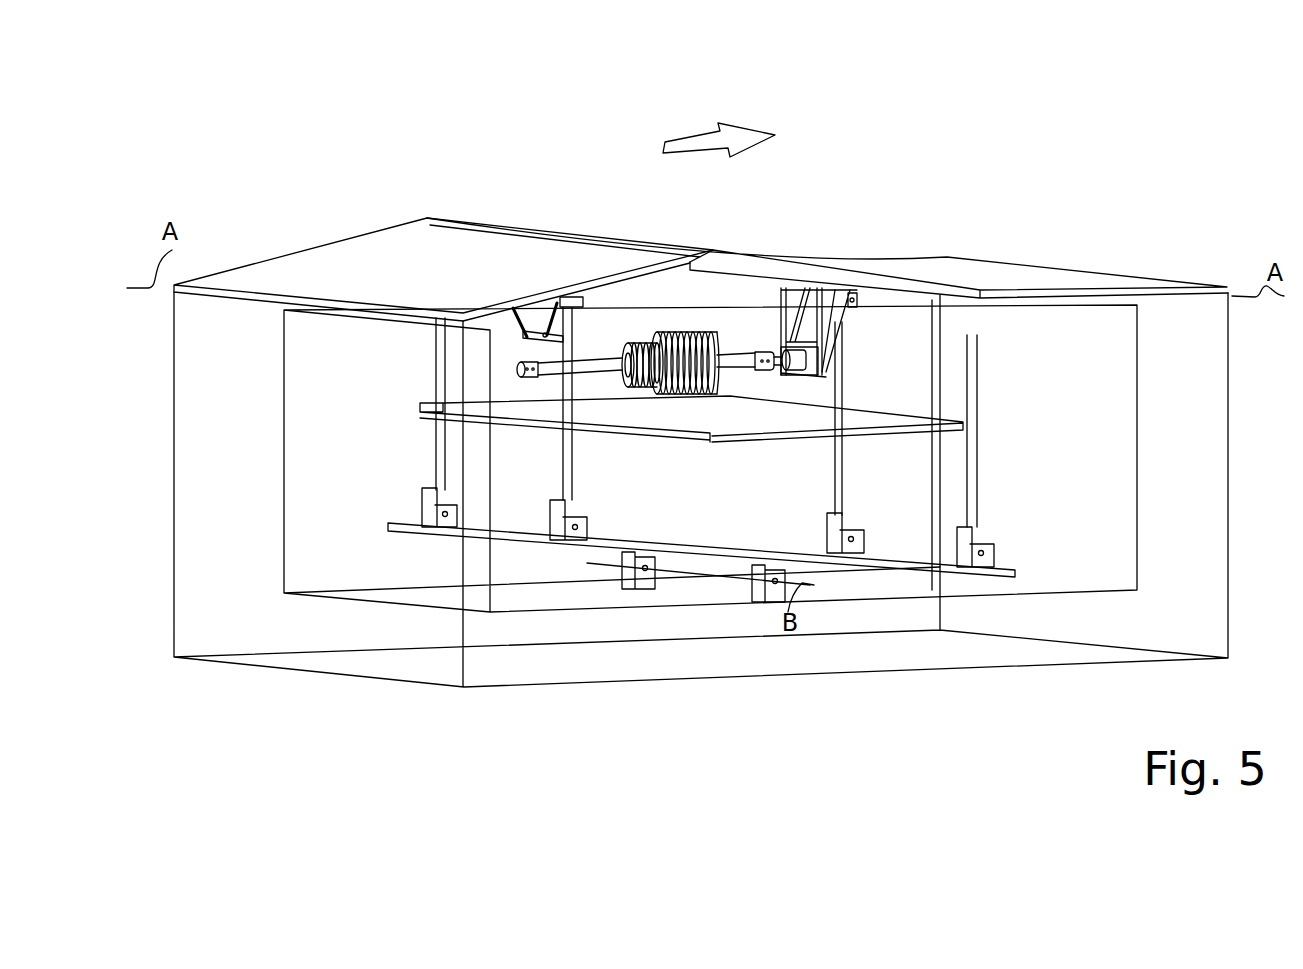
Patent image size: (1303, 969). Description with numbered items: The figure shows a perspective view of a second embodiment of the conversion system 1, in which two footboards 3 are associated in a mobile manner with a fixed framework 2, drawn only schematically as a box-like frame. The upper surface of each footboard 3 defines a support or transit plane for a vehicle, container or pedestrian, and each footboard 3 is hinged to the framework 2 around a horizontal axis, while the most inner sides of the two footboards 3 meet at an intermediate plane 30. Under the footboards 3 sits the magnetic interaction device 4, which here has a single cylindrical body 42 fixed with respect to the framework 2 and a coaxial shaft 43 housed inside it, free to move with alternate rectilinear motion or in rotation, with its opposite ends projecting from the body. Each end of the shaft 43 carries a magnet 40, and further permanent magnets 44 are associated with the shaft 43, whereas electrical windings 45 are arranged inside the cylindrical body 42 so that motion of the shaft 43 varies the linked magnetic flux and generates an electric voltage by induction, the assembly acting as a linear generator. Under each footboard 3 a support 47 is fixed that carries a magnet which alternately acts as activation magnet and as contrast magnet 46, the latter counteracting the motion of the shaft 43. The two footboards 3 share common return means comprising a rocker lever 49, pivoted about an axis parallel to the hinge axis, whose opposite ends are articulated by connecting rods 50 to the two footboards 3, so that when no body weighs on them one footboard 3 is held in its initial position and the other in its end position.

The system 1 is at (1178, 144).
The fixed framework 2 is at (1229, 494).
The footboard 3 is at (345, 245).
The magnetic interaction device 4 is at (708, 407).
The intermediate plane 30 is at (736, 248).
The magnet 40 is at (763, 352).
The cylindrical body 42 is at (723, 385).
The shaft 43 is at (597, 367).
The permanent magnets 44 is at (657, 393).
The electrical windings 45 is at (672, 395).
The contrast magnet 46 is at (790, 338).
The support 47 is at (514, 334).
The rocker lever 49 is at (998, 580).
The connecting rods 50 is at (437, 440).